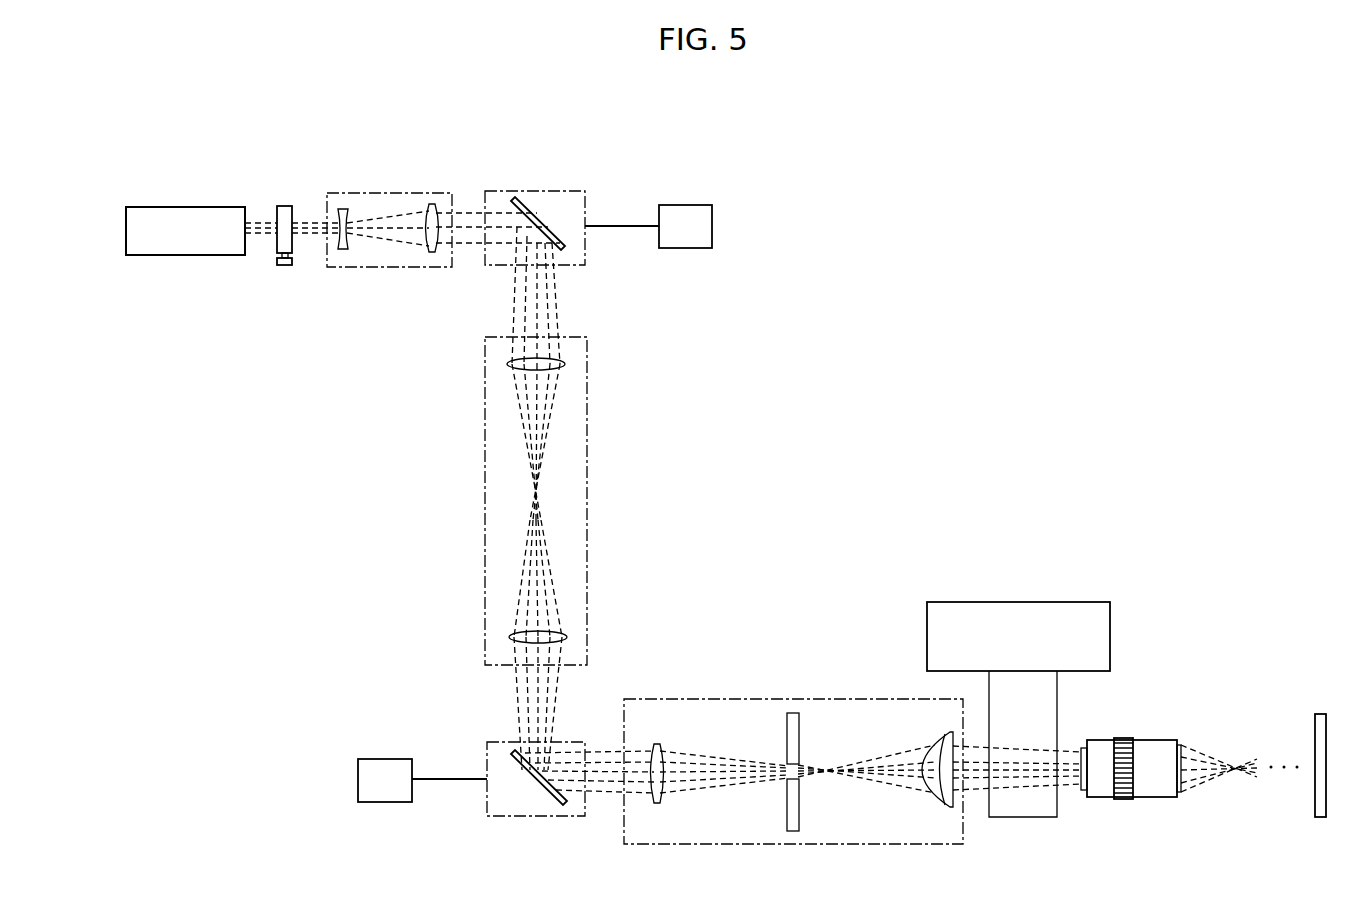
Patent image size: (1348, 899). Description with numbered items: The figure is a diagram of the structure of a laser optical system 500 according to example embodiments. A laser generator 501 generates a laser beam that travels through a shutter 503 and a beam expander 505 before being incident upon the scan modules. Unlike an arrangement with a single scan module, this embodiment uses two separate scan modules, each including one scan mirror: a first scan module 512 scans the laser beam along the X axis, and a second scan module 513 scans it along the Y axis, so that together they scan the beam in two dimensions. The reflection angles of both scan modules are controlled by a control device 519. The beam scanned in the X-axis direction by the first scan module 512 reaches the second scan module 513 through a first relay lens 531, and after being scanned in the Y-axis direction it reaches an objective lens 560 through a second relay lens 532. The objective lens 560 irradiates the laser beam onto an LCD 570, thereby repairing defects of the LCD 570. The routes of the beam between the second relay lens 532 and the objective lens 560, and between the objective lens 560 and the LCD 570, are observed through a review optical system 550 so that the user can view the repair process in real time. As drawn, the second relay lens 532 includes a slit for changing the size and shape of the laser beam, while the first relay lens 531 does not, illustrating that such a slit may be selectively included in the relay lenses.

The laser optical system 500 is at (734, 892).
The laser generator 501 is at (190, 207).
The shutter 503 is at (286, 206).
The beam expander 505 is at (393, 193).
The first scan module 512 is at (535, 191).
The second scan module 513 is at (490, 742).
The control device 519 is at (712, 223).
The first relay lens 531 is at (485, 498).
The second relay lens 532 is at (822, 699).
The review optical system 550 is at (1022, 602).
The objective lens 560 is at (1148, 740).
The LCD 570 is at (1318, 714).